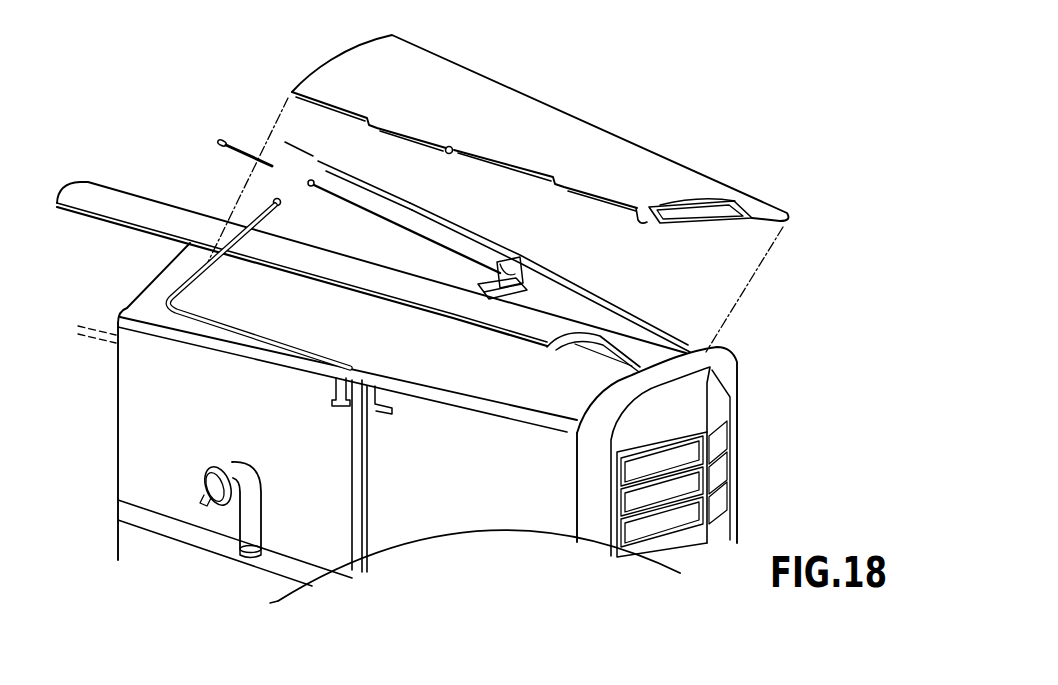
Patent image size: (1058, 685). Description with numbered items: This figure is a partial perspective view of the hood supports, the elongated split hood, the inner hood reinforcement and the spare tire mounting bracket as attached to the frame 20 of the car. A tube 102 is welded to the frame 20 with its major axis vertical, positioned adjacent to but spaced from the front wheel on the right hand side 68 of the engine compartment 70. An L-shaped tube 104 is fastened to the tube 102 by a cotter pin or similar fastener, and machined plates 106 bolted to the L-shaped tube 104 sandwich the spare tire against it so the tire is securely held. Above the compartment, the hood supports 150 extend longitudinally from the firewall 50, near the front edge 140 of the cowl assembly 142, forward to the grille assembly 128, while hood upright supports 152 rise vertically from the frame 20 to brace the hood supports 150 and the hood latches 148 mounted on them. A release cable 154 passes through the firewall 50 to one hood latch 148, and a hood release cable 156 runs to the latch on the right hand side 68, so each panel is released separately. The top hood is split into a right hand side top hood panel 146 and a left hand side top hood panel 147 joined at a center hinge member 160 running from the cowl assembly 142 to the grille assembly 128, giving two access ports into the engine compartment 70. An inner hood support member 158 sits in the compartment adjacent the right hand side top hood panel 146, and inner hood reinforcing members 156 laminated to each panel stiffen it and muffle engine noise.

The frame 20 is at (207, 538).
The firewall 50 is at (272, 191).
The right hand side of the engine compartment 68 is at (145, 518).
The engine compartment 70 is at (448, 493).
The tube 102 is at (260, 552).
The L-shaped tube 104 is at (253, 507).
The machined plates 106 is at (213, 465).
The grille assembly 128 is at (733, 397).
The front edge 140 is at (167, 267).
The cowl assembly 142 is at (312, 155).
The right hand side top hood panel 146 is at (453, 313).
The left hand side top hood panel 147 is at (750, 197).
The hood latch 148 is at (527, 292).
The hood support 150 is at (610, 315).
The hood upright support 152 is at (487, 289).
The release cable 154 is at (372, 212).
The hood release cable 156 is at (728, 224).
The inner hood support member 158 is at (242, 328).
The center hinge member 160 is at (639, 219).